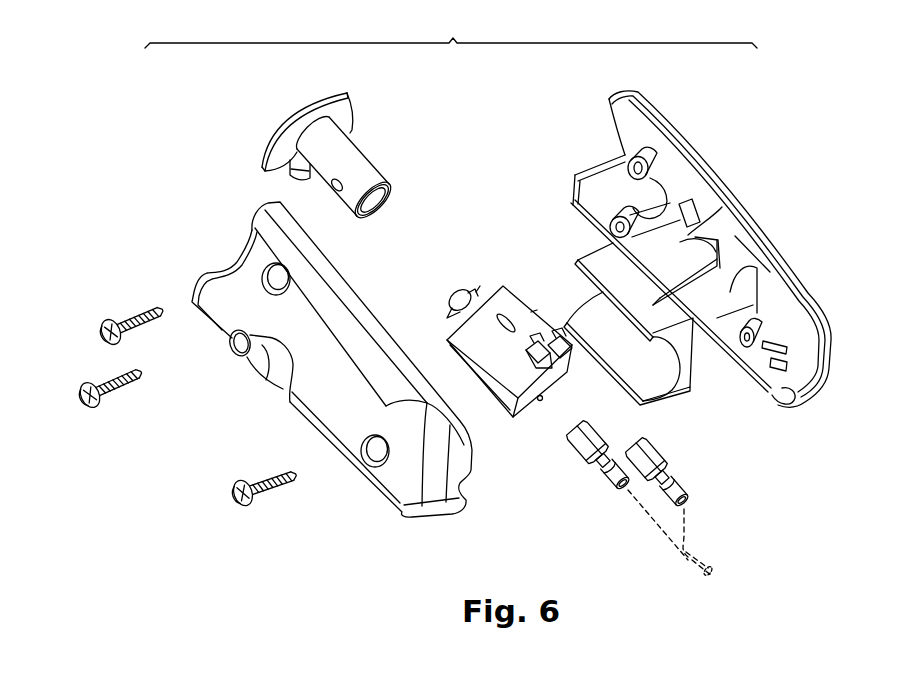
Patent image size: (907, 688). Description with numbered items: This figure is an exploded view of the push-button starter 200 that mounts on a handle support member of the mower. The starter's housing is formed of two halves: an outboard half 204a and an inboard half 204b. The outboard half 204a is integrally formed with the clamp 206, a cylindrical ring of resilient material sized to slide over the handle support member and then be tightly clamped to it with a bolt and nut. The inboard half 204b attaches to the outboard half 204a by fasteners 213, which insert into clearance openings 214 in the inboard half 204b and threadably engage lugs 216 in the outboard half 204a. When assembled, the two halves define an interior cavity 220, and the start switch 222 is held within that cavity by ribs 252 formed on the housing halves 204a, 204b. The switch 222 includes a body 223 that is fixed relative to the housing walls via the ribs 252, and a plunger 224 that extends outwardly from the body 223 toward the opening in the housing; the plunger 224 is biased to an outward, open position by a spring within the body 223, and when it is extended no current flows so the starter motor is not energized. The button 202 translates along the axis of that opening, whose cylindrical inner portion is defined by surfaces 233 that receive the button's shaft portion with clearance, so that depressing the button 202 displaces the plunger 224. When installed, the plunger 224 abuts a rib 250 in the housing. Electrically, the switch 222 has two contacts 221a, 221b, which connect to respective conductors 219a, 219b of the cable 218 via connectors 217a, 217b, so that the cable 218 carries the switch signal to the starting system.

The push-button starter 200 is at (451, 31).
The button 202 is at (284, 131).
The outboard half 204a is at (832, 333).
The inboard half 204b is at (430, 518).
The clamp 206 is at (578, 258).
The fasteners 213 is at (104, 338).
The clearance openings 214 is at (268, 292).
The lugs 216 is at (628, 152).
The connector 217a is at (641, 447).
The connector 217b is at (573, 455).
The cable 218 is at (714, 556).
The conductor 219a is at (690, 530).
The conductor 219b is at (648, 521).
The interior cavity 220 is at (680, 237).
The contact 221a is at (574, 358).
The contact 221b is at (538, 399).
The start switch 222 is at (515, 365).
The body 223 is at (538, 302).
The plunger 224 is at (449, 292).
The surfaces 233 is at (663, 210).
The rib 250 is at (665, 245).
The ribs 252 is at (735, 292).